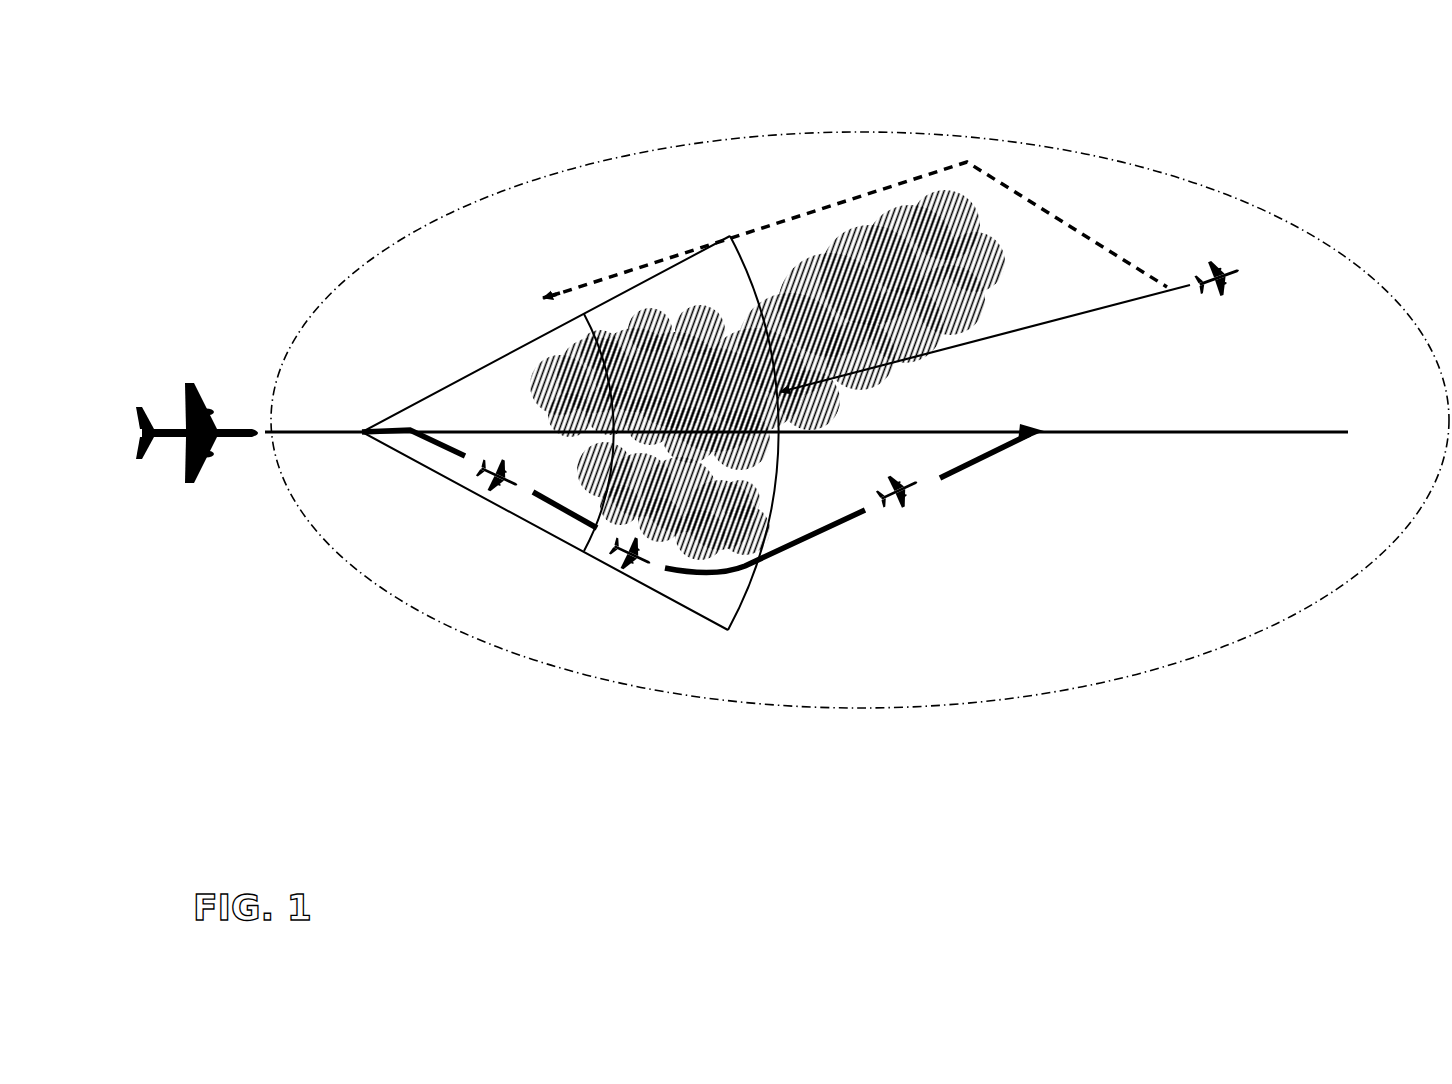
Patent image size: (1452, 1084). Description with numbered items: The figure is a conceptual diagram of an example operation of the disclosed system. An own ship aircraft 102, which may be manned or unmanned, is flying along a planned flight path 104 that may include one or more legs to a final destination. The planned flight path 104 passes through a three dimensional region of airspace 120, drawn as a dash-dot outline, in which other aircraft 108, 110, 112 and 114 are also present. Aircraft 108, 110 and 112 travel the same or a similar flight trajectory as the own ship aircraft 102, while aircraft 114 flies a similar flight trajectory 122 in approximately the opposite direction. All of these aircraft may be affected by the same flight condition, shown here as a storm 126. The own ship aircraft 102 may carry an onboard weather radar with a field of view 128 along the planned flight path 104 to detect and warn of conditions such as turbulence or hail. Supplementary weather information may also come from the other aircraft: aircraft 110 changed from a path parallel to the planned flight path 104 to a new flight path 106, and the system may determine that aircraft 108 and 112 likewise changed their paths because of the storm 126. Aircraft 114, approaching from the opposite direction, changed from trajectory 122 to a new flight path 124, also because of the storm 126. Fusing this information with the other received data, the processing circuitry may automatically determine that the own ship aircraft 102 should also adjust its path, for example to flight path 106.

The own ship aircraft 102 is at (176, 393).
The planned flight path 104 is at (1188, 440).
The new flight path 106 is at (811, 547).
The aircraft 108 is at (476, 517).
The aircraft 110 is at (610, 592).
The aircraft 112 is at (917, 527).
The aircraft 114 is at (1230, 243).
The three dimensional region of airspace 120 is at (698, 128).
The flight trajectory 122 is at (1101, 320).
The new flight path 124 is at (1040, 188).
The storm 126 is at (767, 375).
The field of view 128 is at (490, 348).